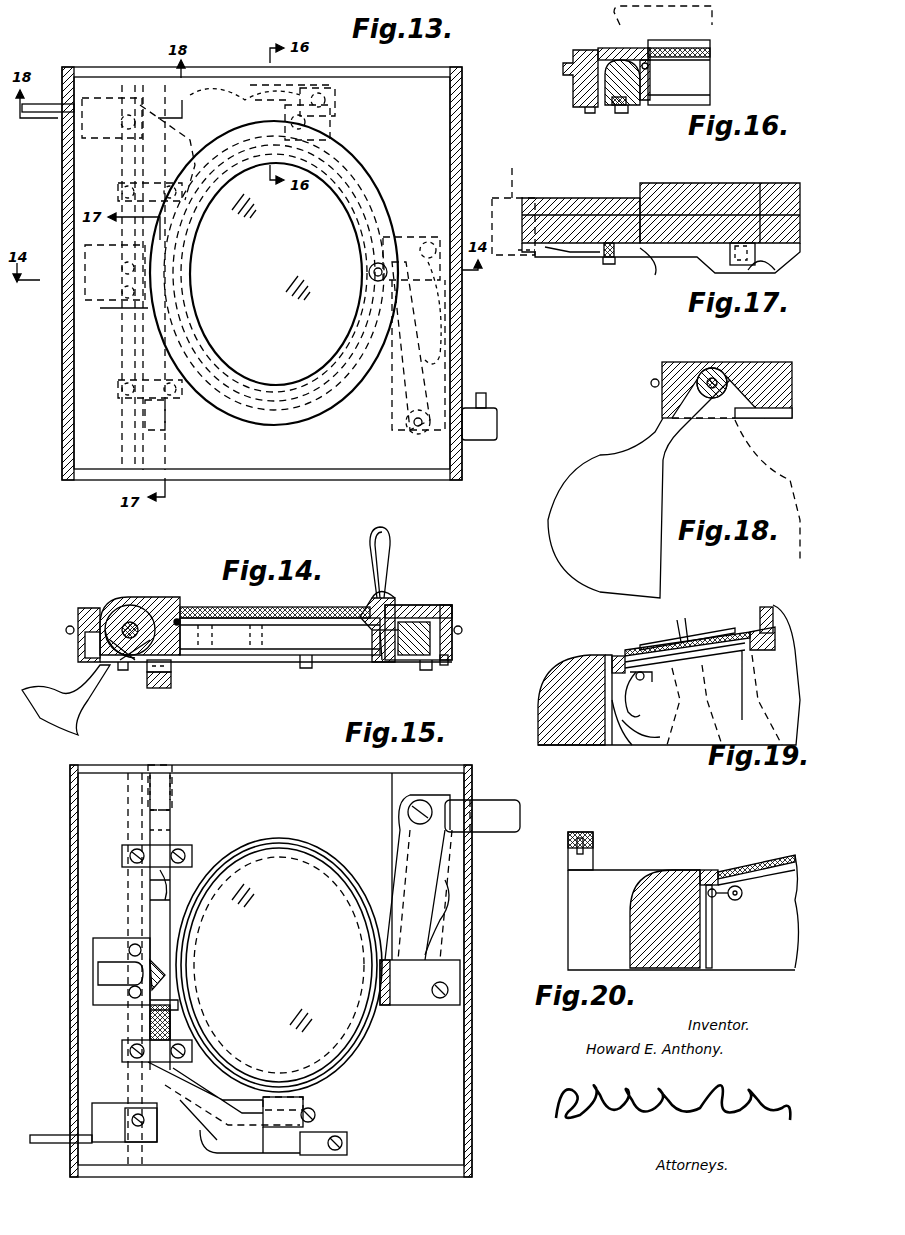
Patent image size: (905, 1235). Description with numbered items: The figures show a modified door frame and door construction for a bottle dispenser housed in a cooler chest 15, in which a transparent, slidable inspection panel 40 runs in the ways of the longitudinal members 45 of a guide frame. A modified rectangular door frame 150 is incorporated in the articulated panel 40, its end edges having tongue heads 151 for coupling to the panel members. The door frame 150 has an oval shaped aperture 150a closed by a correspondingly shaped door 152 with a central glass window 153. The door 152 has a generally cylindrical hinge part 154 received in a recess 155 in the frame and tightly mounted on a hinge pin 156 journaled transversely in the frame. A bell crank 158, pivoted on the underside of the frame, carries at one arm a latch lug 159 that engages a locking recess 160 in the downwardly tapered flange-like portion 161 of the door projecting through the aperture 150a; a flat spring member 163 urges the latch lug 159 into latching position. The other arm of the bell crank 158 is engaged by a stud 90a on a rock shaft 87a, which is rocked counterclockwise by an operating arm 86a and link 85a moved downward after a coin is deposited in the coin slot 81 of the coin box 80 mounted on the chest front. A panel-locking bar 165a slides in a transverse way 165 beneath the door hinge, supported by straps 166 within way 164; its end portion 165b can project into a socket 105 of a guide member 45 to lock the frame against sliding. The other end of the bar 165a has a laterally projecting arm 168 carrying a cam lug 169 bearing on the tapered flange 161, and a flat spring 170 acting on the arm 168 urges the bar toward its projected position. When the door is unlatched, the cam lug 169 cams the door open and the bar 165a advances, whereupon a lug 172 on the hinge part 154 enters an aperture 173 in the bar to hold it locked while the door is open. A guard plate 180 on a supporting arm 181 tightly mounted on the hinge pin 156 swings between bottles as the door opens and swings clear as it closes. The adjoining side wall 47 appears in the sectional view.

In FIG. 19, the cooler chest 15 is at (539, 684).
In FIG. 20, the cooler chest 15 is at (696, 870).
In FIG. 19, the inspection panel 40 is at (654, 648).
In FIG. 20, the inspection panel 40 is at (770, 858).
In FIG. 17, the longitudinal member 45 is at (512, 175).
In FIG. 19, the longitudinal member 45 is at (614, 655).
In FIG. 20, the longitudinal member 45 is at (712, 870).
In FIG. 19, the side wall 47 is at (768, 607).
In FIG. 20, the coin box 80 is at (568, 892).
In FIG. 20, the coin slot 81 is at (595, 848).
In FIG. 20, the link 85a is at (714, 945).
In FIG. 20, the operating arm 86a is at (716, 897).
In FIG. 19, the rock shaft 87a is at (642, 690).
In FIG. 20, the rock shaft 87a is at (742, 893).
In FIG. 13, the stud 90a is at (486, 398).
In FIG. 19, the stud 90a is at (643, 680).
In FIG. 17, the socket 105 is at (532, 258).
In FIG. 13, the door frame 150 is at (440, 103).
In FIG. 14, the door frame 150 is at (436, 606).
In FIG. 15, the door frame 150 is at (445, 1077).
In FIG. 16, the door frame 150 is at (570, 63).
In FIG. 17, the door frame 150 is at (554, 196).
In FIG. 18, the door frame 150 is at (760, 362).
In FIG. 14, the oval shaped aperture 150a is at (390, 600).
In FIG. 15, the oval shaped aperture 150a is at (305, 850).
In FIG. 13, the tongue heads 151 is at (462, 125).
In FIG. 14, the tongue heads 151 is at (66, 628).
In FIG. 15, the tongue heads 151 is at (70, 840).
In FIG. 18, the tongue heads 151 is at (651, 383).
In FIG. 13, the door 152 is at (322, 410).
In FIG. 14, the door 152 is at (343, 594).
In FIG. 16, the door 152 is at (712, 28).
In FIG. 17, the door 152 is at (725, 182).
In FIG. 19, the door 152 is at (702, 635).
In FIG. 13, the window 153 is at (277, 273).
In FIG. 14, the window 153 is at (205, 605).
In FIG. 15, the window 153 is at (285, 965).
In FIG. 16, the window 153 is at (712, 52).
In FIG. 13, the hinge part 154 is at (118, 310).
In FIG. 14, the hinge part 154 is at (122, 605).
In FIG. 13, the recess 155 is at (105, 303).
In FIG. 14, the recess 155 is at (108, 610).
In FIG. 15, the recess 155 is at (112, 938).
In FIG. 13, the hinge pin 156 is at (134, 354).
In FIG. 14, the hinge pin 156 is at (133, 620).
In FIG. 15, the hinge pin 156 is at (128, 803).
In FIG. 18, the hinge pin 156 is at (710, 368).
In FIG. 13, the bell crank 158 is at (481, 440).
In FIG. 15, the bell crank 158 is at (447, 804).
In FIG. 19, the bell crank 158 is at (632, 715).
In FIG. 13, the latch lug 159 is at (418, 436).
In FIG. 14, the latch lug 159 is at (385, 640).
In FIG. 15, the latch lug 159 is at (450, 805).
In FIG. 14, the locking recess 160 is at (378, 640).
In FIG. 14, the flange-like portion 161 is at (372, 660).
In FIG. 16, the flange-like portion 161 is at (650, 80).
In FIG. 13, the flat spring member 163 is at (430, 307).
In FIG. 14, the flat spring member 163 is at (450, 658).
In FIG. 15, the flat spring member 163 is at (432, 920).
In FIG. 15, the way 164 is at (165, 892).
In FIG. 17, the way 164 is at (645, 250).
In FIG. 15, the transverse way 165 is at (170, 812).
In FIG. 13, the panel-locking bar 165a is at (162, 418).
In FIG. 14, the panel-locking bar 165a is at (166, 683).
In FIG. 15, the panel-locking bar 165a is at (162, 790).
In FIG. 17, the panel-locking bar 165a is at (665, 252).
In FIG. 17, the end portion 165b is at (553, 255).
In FIG. 13, the straps 166 is at (125, 410).
In FIG. 15, the straps 166 is at (168, 852).
In FIG. 16, the straps 166 is at (628, 113).
In FIG. 17, the straps 166 is at (620, 264).
In FIG. 15, the laterally projecting arm 168 is at (240, 1148).
In FIG. 13, the cam lug 169 is at (312, 112).
In FIG. 15, the cam lug 169 is at (305, 1100).
In FIG. 16, the cam lug 169 is at (610, 72).
In FIG. 13, the flat spring 170 is at (246, 100).
In FIG. 15, the flat spring 170 is at (262, 1135).
In FIG. 14, the lug 172 is at (122, 665).
In FIG. 15, the lug 172 is at (100, 975).
In FIG. 17, the lug 172 is at (752, 268).
In FIG. 15, the aperture 173 is at (162, 980).
In FIG. 17, the aperture 173 is at (775, 268).
In FIG. 13, the guard plate 180 is at (48, 104).
In FIG. 14, the guard plate 180 is at (52, 698).
In FIG. 15, the guard plate 180 is at (52, 1133).
In FIG. 18, the guard plate 180 is at (665, 498).
In FIG. 19, the guard plate 180 is at (738, 690).
In FIG. 18, the supporting arm 181 is at (682, 438).